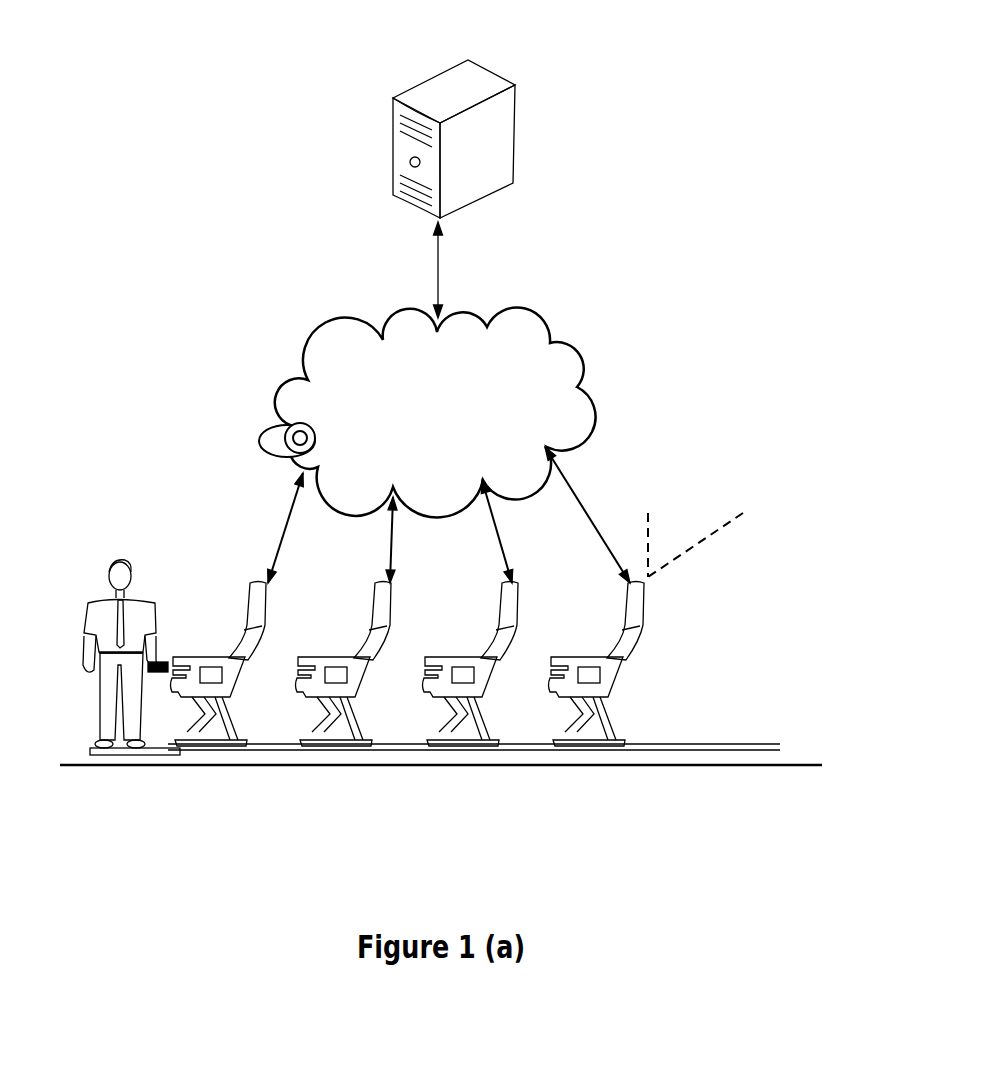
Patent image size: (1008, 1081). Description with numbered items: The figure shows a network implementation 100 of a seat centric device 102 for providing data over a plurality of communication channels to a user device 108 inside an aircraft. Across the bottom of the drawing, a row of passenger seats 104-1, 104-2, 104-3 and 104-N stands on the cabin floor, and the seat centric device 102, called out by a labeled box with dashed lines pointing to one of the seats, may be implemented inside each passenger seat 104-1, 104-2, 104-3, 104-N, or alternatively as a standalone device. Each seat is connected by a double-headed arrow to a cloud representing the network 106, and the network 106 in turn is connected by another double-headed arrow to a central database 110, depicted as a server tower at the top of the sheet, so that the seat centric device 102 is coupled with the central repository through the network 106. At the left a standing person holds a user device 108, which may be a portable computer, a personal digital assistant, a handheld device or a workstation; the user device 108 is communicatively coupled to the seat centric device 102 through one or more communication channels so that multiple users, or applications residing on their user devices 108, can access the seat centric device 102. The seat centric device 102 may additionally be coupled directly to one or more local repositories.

The system 100 is at (268, 132).
The central database 110 is at (534, 83).
The network 106 is at (405, 414).
The seat centric device 102 is at (757, 501).
The user device 108 is at (168, 743).
The passenger seat 104-1 is at (237, 713).
The passenger seat 104-2 is at (362, 713).
The passenger seat 104-3 is at (488, 713).
The passenger seat 104-N is at (612, 713).